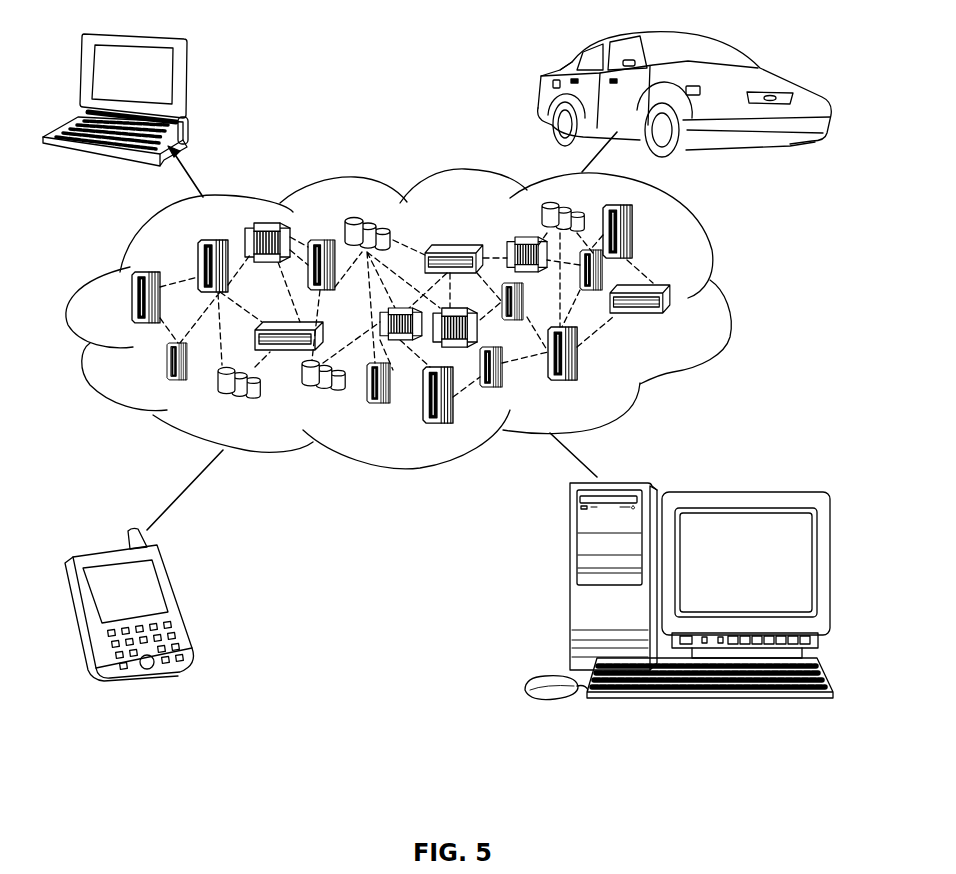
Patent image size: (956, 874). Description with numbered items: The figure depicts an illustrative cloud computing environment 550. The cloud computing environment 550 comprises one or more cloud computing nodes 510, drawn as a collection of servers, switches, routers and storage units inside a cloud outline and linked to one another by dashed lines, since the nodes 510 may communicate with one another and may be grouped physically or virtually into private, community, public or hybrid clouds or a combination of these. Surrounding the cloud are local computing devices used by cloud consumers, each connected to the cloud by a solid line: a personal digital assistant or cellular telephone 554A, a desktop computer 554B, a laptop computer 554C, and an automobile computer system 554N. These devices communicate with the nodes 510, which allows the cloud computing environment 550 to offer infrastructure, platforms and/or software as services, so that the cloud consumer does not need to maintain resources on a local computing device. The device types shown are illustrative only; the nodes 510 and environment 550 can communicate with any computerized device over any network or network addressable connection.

The cloud computing nodes 510 is at (689, 316).
The cloud computing environment 550 is at (712, 265).
The personal digital assistant or cellular telephone 554A is at (178, 602).
The desktop computer 554B is at (568, 582).
The laptop computer 554C is at (185, 80).
The automobile computer system 554N is at (548, 83).